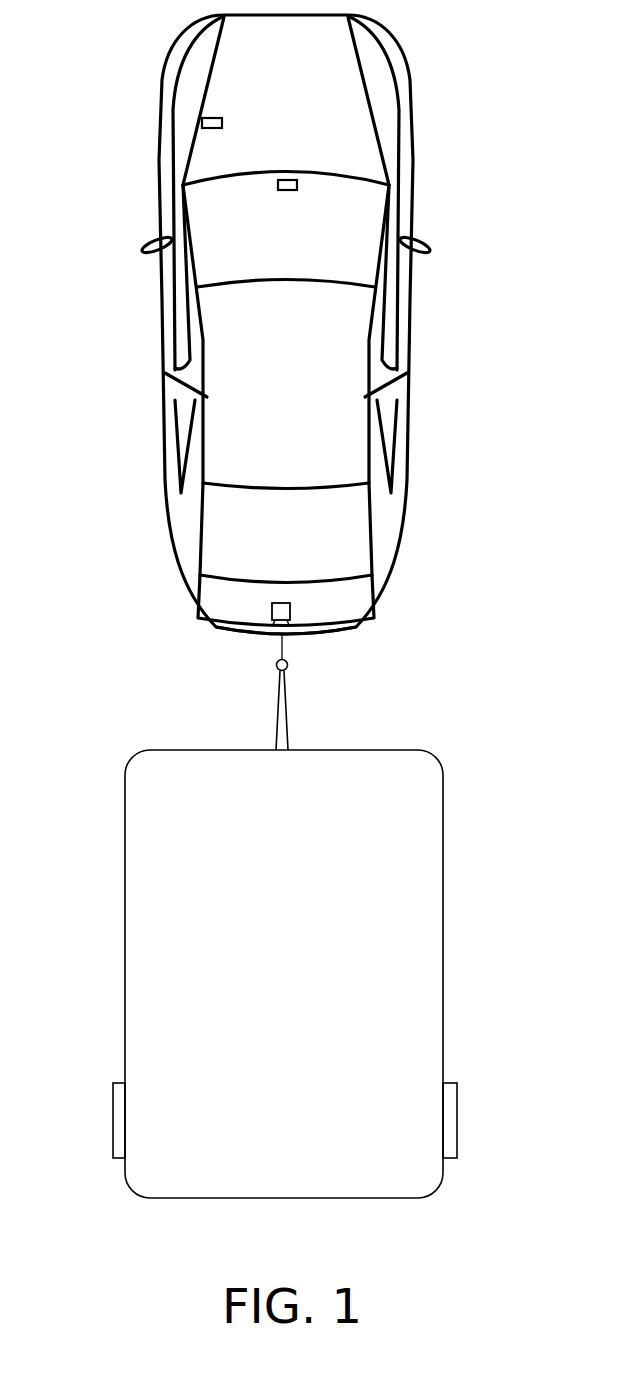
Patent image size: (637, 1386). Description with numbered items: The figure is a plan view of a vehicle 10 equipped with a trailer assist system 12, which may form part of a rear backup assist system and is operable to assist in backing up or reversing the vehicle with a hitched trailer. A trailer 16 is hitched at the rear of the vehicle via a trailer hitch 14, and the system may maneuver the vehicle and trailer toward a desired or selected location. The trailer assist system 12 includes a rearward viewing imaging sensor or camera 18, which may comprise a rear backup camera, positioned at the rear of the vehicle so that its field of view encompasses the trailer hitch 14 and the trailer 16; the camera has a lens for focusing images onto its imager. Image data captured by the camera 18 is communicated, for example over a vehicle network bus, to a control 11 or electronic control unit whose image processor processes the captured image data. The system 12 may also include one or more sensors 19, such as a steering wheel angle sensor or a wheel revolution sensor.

The vehicle 10 is at (424, 102).
The control 11 is at (297, 185).
The trailer assist system 12 is at (124, 590).
The trailer hitch 14 is at (288, 667).
The trailer 16 is at (150, 777).
The rearward viewing camera 18 is at (290, 612).
The sensor 19 is at (222, 123).